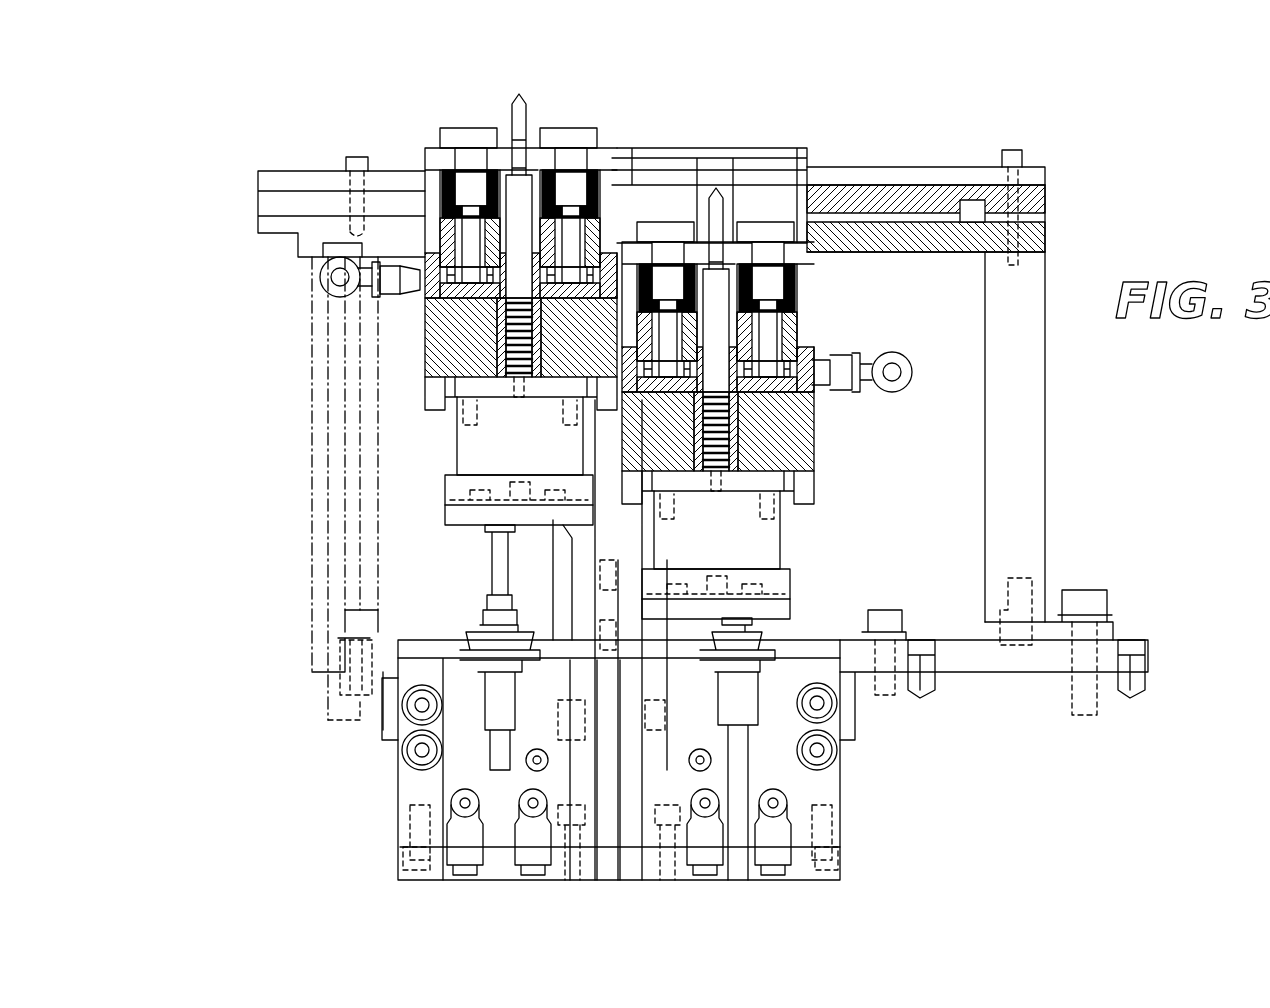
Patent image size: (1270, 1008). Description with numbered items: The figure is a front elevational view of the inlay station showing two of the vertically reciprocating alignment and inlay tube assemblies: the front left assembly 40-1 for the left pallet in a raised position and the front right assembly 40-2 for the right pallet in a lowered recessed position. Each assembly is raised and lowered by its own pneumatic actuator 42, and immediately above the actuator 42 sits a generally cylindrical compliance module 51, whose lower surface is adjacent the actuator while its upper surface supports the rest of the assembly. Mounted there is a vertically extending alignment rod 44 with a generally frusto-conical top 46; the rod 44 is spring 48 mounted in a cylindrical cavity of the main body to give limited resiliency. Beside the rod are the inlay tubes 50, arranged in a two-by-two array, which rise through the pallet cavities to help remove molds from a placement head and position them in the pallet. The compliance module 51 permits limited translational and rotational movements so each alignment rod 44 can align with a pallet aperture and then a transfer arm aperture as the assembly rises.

The front left alignment and inlay tube assembly 40-1 is at (428, 322).
The front right alignment and inlay tube assembly 40-2 is at (812, 428).
The pneumatic actuator 42 is at (492, 560).
The alignment rod 44 is at (527, 122).
The frusto-conical top 46 is at (512, 104).
The spring 48 is at (507, 332).
The inlay tube 50 is at (440, 138).
The compliance module 51 is at (457, 450).